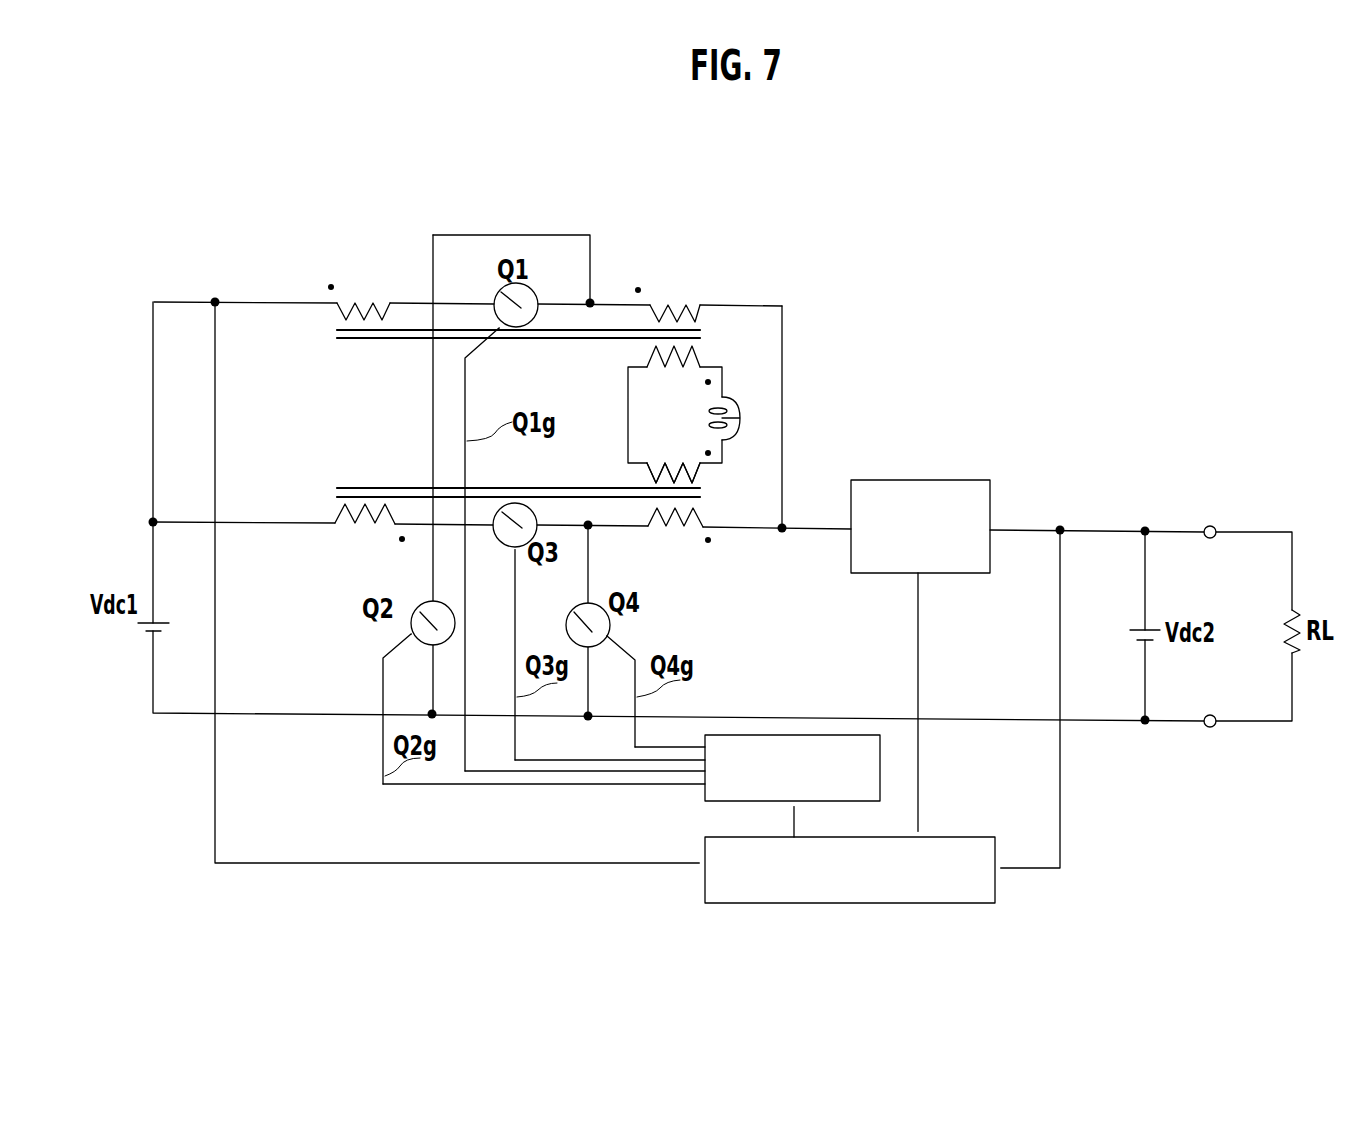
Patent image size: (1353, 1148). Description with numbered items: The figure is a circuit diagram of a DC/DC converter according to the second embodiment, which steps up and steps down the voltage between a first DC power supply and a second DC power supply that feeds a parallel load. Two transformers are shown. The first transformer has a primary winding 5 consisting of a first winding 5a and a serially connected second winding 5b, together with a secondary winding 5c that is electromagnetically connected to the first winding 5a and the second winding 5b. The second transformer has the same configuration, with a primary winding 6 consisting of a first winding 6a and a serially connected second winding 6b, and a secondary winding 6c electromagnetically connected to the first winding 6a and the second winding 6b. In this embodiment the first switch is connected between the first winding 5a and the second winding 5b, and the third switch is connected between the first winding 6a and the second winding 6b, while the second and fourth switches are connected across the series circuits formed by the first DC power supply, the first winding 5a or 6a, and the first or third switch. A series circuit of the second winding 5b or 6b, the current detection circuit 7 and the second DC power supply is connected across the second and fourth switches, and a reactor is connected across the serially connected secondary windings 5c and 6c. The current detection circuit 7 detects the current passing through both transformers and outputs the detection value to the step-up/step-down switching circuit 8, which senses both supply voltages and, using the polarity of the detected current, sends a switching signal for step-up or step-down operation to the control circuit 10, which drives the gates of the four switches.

The primary winding 5 is at (618, 218).
The first winding 5a is at (392, 298).
The second winding 5b is at (702, 298).
The secondary winding 5c is at (650, 370).
The primary winding 6 is at (678, 573).
The first winding 6a is at (340, 530).
The second winding 6b is at (697, 538).
The secondary winding 6c is at (698, 458).
The current detection circuit 7 is at (915, 480).
The step-up/step-down switching circuit 8 is at (820, 903).
The control circuit 10 is at (720, 802).